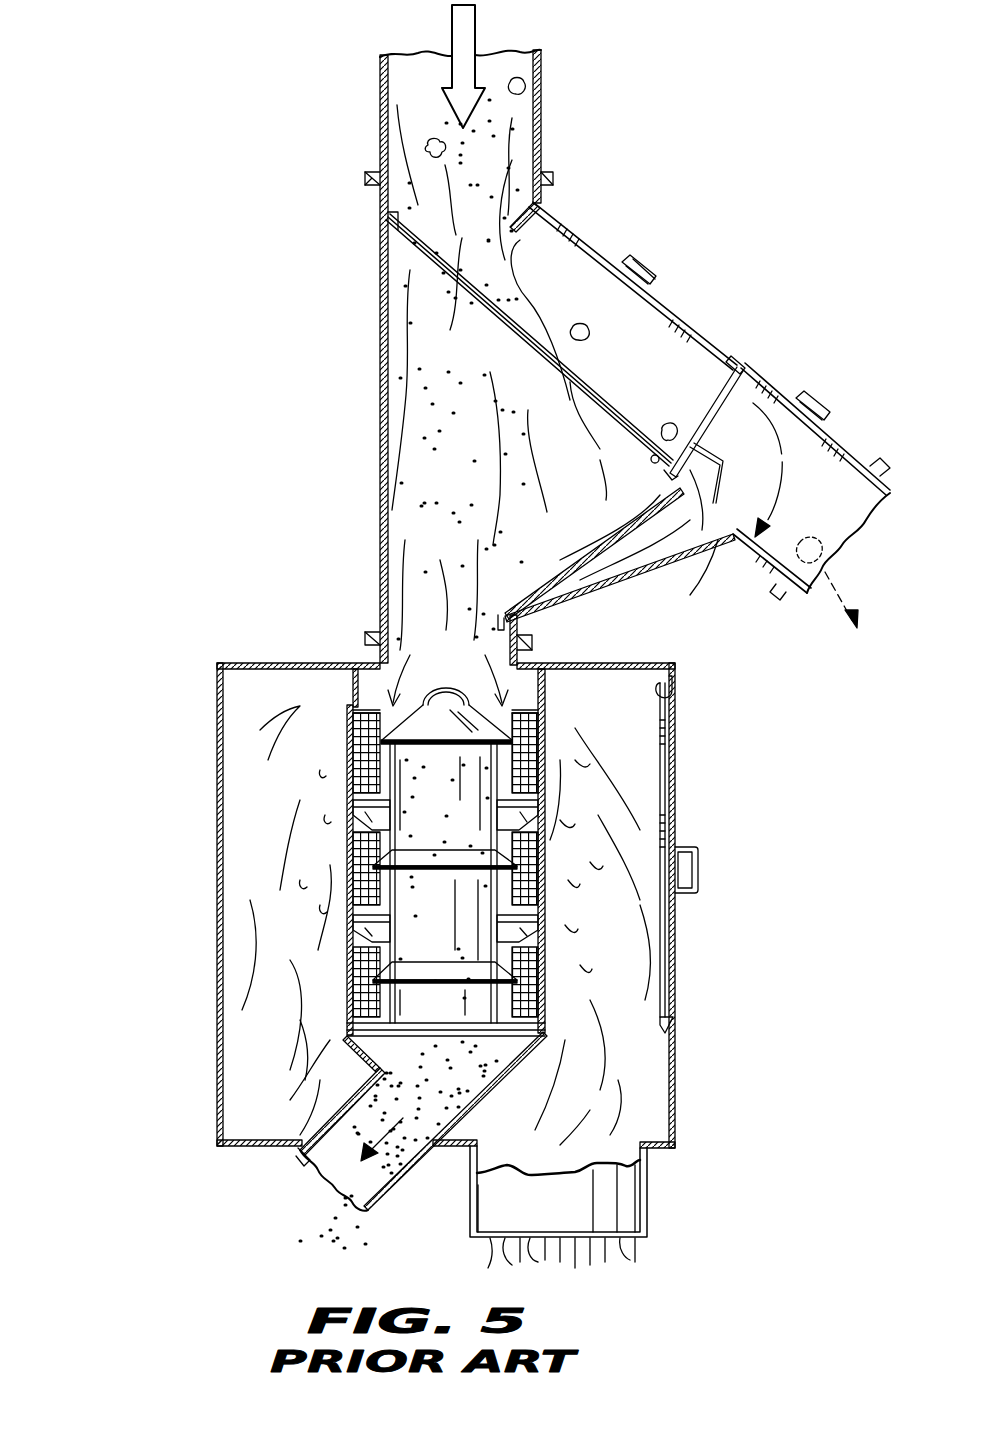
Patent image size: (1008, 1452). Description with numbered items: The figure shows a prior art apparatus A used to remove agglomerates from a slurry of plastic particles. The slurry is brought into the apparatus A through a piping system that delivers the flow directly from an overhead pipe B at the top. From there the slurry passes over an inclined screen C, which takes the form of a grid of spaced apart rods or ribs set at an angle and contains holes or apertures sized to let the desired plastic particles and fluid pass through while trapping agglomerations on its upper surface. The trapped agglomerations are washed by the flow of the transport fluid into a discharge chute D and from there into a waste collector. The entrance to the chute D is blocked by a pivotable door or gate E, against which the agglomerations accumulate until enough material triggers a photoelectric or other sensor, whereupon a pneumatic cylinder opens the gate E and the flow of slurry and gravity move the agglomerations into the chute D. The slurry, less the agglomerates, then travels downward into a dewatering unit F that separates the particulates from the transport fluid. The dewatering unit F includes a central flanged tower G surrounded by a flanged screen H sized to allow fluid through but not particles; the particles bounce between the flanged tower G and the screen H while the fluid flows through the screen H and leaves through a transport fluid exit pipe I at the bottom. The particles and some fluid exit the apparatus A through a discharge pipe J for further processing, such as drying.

The apparatus A is at (218, 454).
The overhead pipe B is at (382, 112).
The screen C is at (462, 287).
The discharge chute D is at (815, 502).
The pivotable door or gate E is at (708, 400).
The dewatering unit F is at (314, 722).
The central flanged tower G is at (390, 902).
The flanged screen H is at (348, 840).
The transport fluid exit pipe I is at (647, 1202).
The discharge pipe J is at (312, 1158).